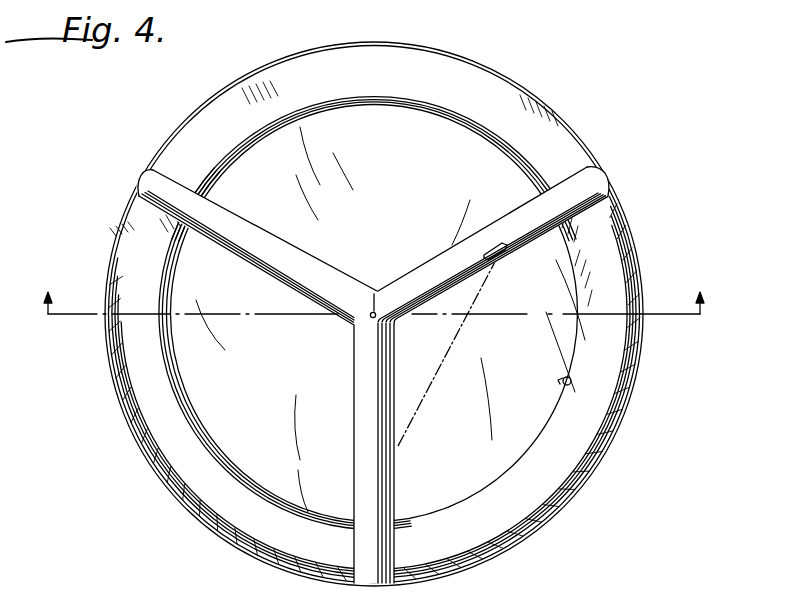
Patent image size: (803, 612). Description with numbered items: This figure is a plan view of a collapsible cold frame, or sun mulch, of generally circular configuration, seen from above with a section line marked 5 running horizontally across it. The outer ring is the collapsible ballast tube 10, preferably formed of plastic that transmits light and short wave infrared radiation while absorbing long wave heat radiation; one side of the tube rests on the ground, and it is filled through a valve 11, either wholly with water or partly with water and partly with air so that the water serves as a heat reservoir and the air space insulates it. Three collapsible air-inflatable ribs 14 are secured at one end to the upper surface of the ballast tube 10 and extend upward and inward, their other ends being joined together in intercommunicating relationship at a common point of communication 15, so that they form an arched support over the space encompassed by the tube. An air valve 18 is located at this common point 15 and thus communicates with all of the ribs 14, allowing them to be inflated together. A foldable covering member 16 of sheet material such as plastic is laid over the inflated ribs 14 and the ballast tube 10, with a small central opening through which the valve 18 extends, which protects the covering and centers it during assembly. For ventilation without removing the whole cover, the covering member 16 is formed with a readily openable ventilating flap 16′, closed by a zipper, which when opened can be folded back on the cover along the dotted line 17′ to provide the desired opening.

The section line 5- 5 is at (372, 315).
The ballast tube 10 is at (458, 502).
The valve 11 is at (562, 382).
The collapsible air-inflatable ribs 14 is at (296, 262).
The common point of communication 15 is at (372, 306).
The covering member 16 is at (547, 257).
The ventilating flap 16′ is at (400, 401).
The dotted line 17′ is at (452, 348).
The air valve 18 is at (364, 318).